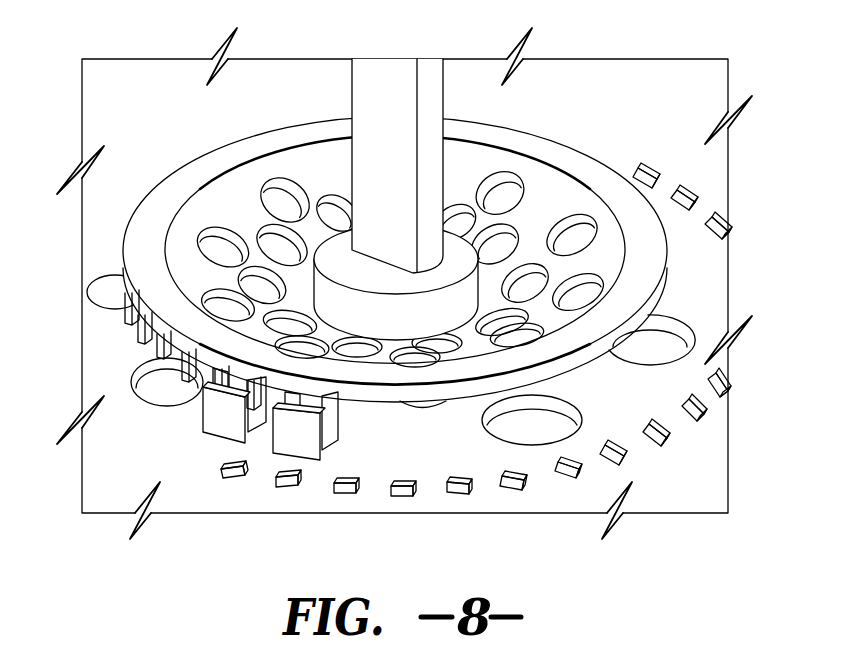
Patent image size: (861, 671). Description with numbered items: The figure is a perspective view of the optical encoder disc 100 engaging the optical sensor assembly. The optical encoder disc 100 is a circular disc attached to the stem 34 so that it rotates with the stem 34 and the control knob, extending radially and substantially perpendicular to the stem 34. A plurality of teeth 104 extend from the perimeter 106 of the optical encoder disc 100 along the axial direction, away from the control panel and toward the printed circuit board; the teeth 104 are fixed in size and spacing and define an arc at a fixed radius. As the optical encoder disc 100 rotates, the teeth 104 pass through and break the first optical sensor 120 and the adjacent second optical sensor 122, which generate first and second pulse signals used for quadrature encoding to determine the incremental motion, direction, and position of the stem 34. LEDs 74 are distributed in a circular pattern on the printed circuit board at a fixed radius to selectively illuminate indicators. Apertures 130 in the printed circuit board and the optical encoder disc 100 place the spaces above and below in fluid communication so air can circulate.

The stem 34 is at (370, 93).
The LEDs 74 is at (462, 497).
The optical encoder disc 100 is at (586, 168).
The teeth 104 is at (140, 360).
The perimeter 106 is at (183, 165).
The first optical sensor 120 is at (228, 425).
The second optical sensor 122 is at (293, 440).
The apertures 130 is at (498, 200).